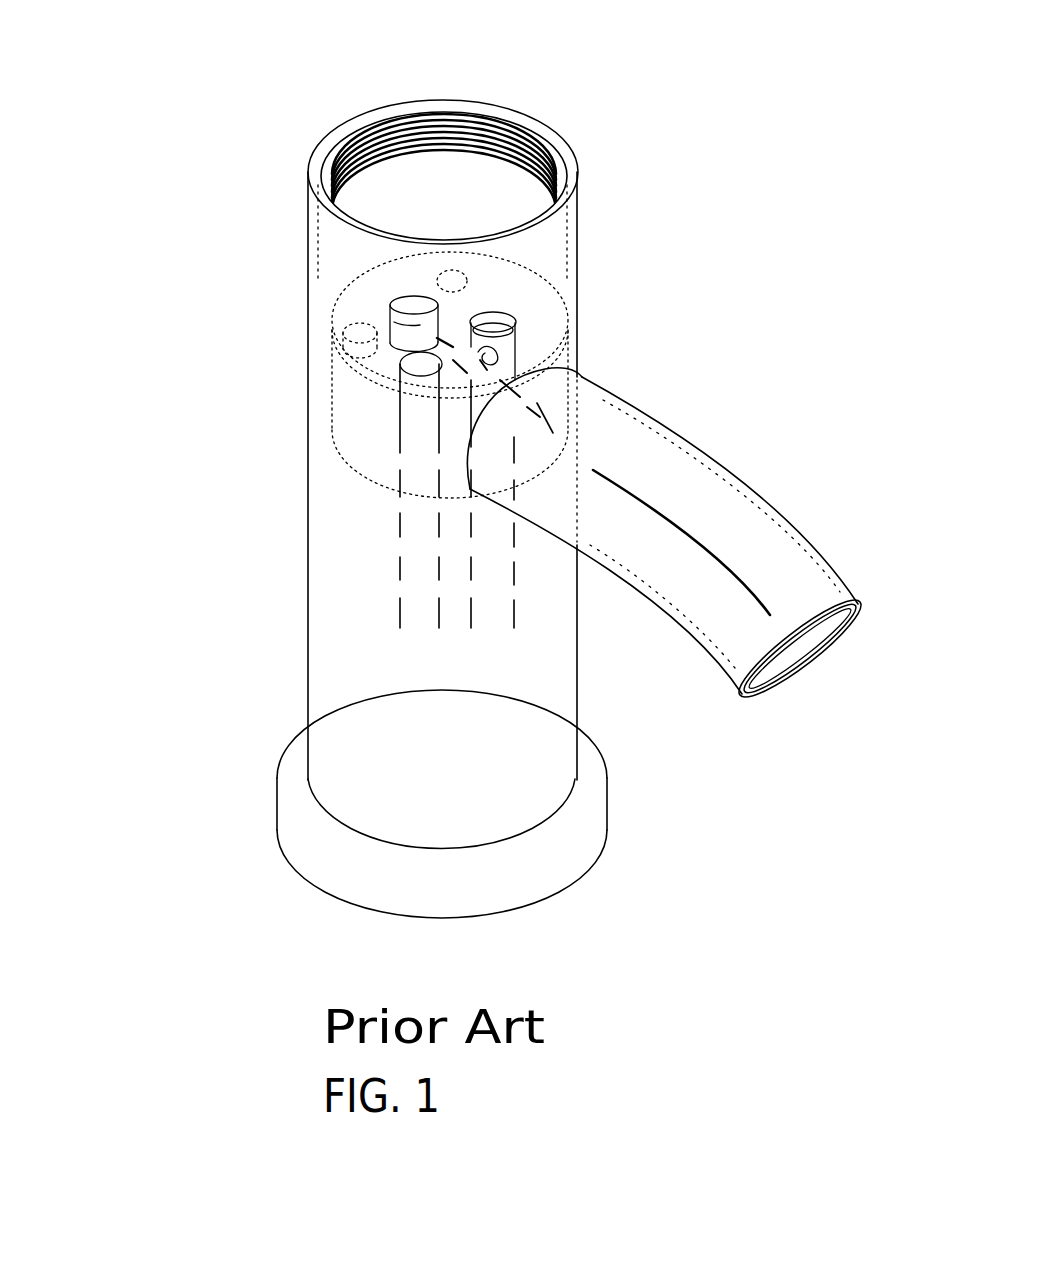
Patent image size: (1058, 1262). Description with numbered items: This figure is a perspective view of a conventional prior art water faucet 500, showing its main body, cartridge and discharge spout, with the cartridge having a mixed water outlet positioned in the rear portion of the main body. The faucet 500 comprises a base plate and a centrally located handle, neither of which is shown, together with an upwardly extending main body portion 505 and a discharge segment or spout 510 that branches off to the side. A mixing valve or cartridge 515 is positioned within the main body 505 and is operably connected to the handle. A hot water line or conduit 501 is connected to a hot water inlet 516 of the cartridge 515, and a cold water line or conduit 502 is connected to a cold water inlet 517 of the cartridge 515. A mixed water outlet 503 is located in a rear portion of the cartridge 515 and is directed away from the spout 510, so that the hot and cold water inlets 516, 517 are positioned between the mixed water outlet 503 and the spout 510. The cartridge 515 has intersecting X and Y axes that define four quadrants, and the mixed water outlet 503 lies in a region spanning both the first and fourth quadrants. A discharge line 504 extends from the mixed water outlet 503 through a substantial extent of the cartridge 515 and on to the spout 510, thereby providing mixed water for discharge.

The conventional faucet 500 is at (643, 117).
The hot water line 501 is at (420, 462).
The cold water line 502 is at (497, 567).
The mixed water outlet 503 is at (420, 296).
The discharge line 504 is at (540, 435).
The main body portion 505 is at (343, 650).
The discharge spout 510 is at (709, 500).
The cartridge 515 is at (262, 389).
The hot water inlet 516 is at (405, 397).
The cold water inlet 517 is at (548, 266).